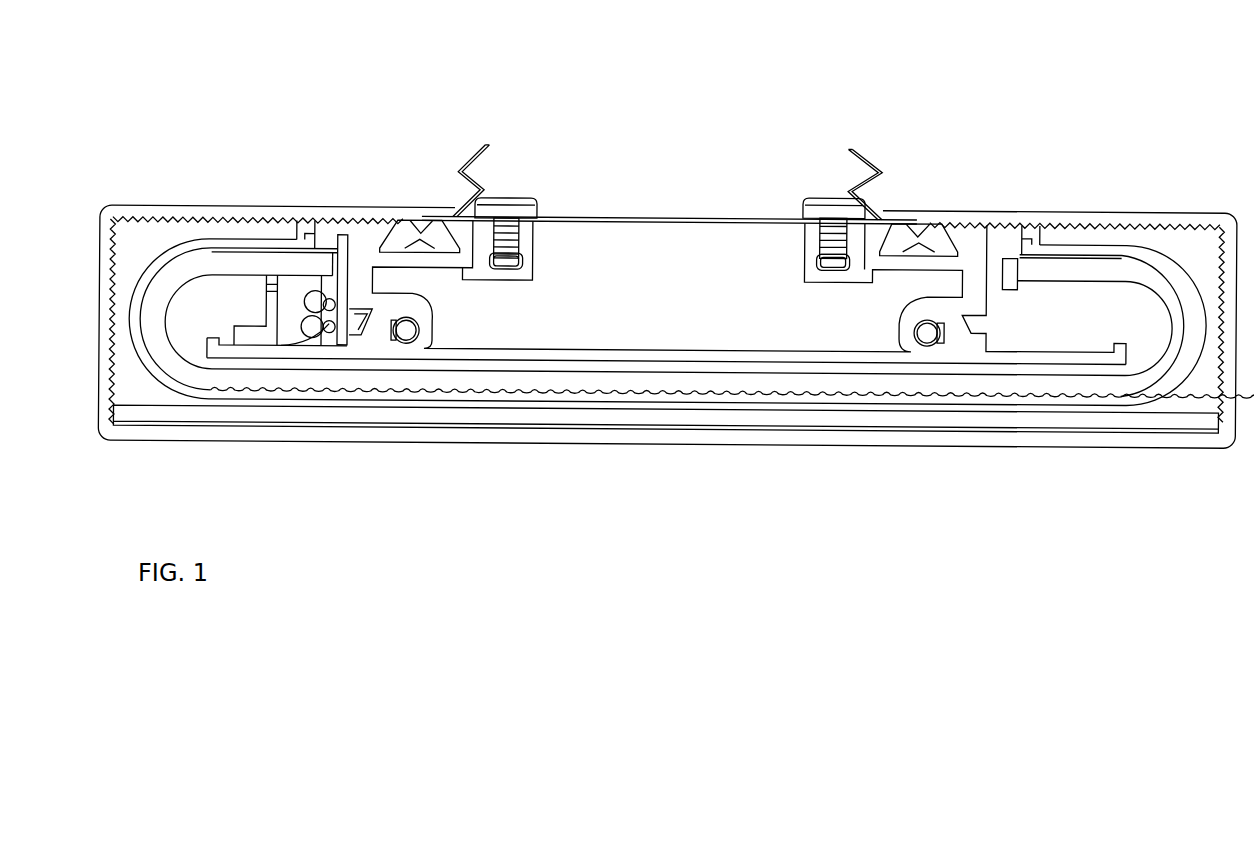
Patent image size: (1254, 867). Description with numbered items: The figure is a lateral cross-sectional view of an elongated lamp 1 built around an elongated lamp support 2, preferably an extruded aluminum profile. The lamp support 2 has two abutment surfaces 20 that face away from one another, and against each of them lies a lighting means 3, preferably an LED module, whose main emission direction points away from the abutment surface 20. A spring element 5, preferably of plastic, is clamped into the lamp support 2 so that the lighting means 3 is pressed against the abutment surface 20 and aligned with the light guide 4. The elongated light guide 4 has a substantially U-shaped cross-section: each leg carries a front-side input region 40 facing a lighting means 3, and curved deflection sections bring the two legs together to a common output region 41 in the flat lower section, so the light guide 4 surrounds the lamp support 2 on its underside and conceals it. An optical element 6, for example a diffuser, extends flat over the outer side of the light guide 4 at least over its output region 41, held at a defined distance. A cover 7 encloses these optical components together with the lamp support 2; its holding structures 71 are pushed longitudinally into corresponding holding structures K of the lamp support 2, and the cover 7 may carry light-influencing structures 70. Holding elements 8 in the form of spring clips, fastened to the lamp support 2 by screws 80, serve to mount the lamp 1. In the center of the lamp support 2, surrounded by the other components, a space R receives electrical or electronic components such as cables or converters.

The elongated lamp 1 is at (997, 92).
The lamp support 2 is at (863, 257).
The lighting means 3 is at (345, 284).
The light guide 4 is at (745, 378).
The output region 41 is at (492, 392).
The spring element 5 is at (270, 315).
The optical element 6 is at (1153, 250).
The cover 7 is at (745, 433).
The light-influencing structures 70 is at (121, 386).
The holding structures 71 is at (403, 236).
The holding elements 8 is at (853, 146).
The screws 80 is at (806, 190).
The abutment surface 20 is at (340, 261).
The input region 40 is at (340, 260).
The holding structures K is at (425, 250).
The space R is at (686, 302).